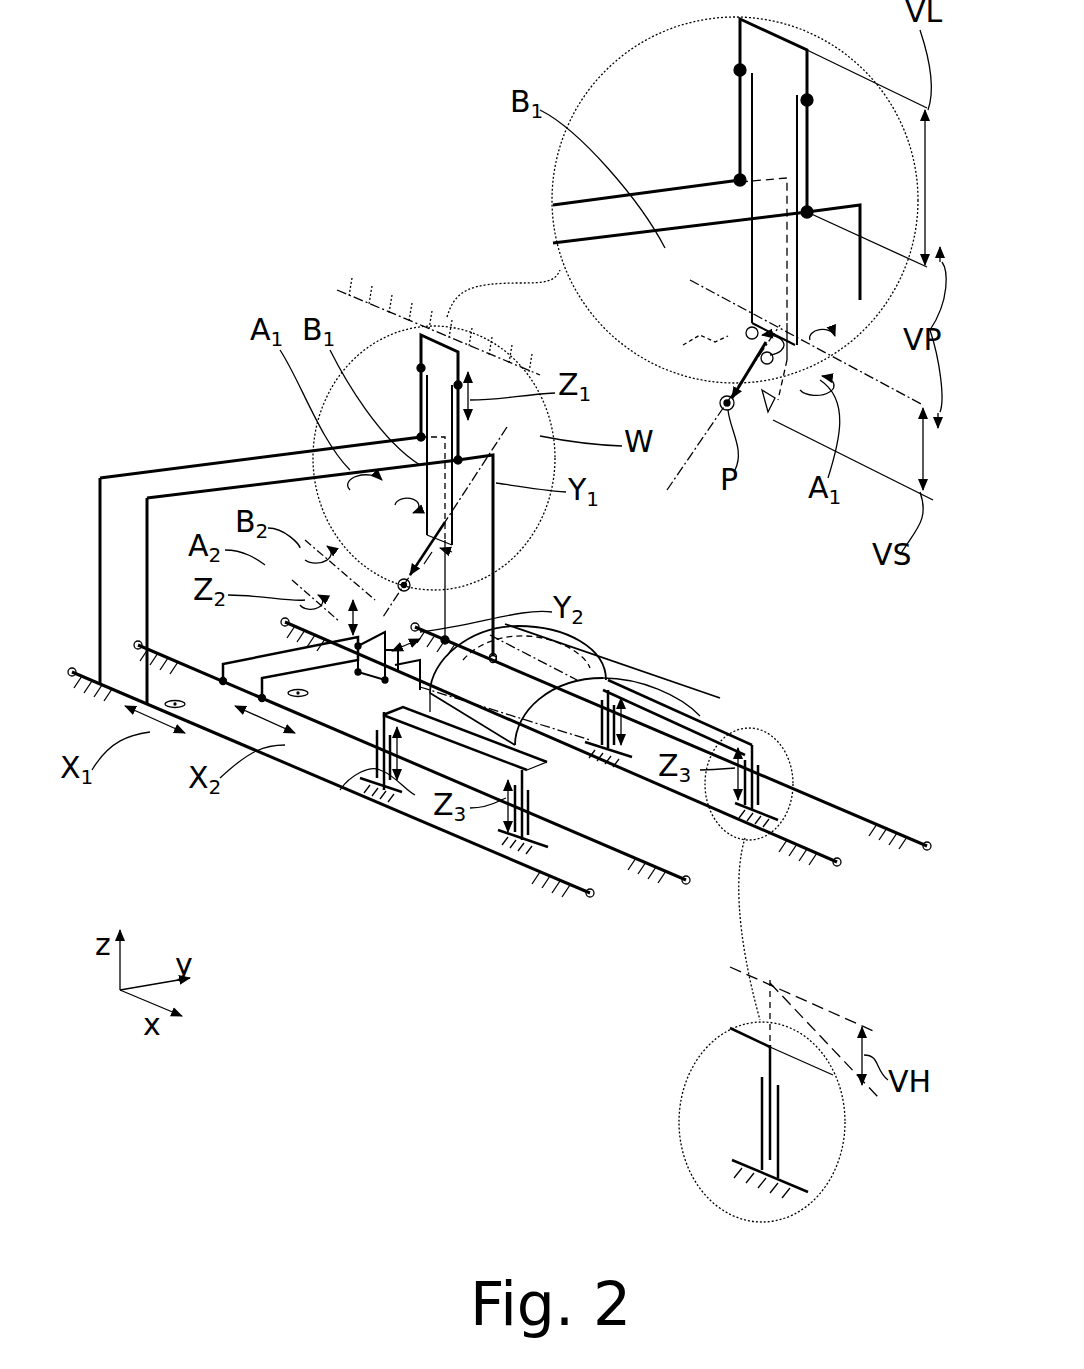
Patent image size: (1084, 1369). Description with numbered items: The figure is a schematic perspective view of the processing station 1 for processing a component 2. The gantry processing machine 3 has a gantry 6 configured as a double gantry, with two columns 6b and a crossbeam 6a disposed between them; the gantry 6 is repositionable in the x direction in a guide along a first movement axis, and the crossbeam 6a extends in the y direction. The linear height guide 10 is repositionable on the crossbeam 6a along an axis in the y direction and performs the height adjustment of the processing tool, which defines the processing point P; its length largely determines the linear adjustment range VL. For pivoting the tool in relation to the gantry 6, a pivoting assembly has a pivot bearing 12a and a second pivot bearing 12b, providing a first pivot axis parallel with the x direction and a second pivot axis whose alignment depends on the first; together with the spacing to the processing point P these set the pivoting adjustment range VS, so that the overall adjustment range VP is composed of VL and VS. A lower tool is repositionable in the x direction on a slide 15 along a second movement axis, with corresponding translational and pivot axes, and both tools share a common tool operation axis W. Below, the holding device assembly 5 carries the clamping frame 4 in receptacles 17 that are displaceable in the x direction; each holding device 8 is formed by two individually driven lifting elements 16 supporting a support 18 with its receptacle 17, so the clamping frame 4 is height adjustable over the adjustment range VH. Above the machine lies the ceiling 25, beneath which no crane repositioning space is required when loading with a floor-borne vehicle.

The processing station 1 is at (160, 258).
The component 2 is at (555, 640).
The gantry processing machine 3 is at (130, 370).
The clamping frame 4 is at (365, 762).
The holding device assembly 5 is at (388, 707).
The gantry 6 is at (270, 502).
The crossbeam 6a is at (200, 470).
The columns 6b is at (122, 556).
The holding device 8 is at (700, 1076).
The linear height guide 10 is at (715, 115).
The pivot bearing 12a is at (448, 548).
The second pivot bearing 12b is at (425, 577).
The slide 15 is at (270, 660).
The lifting elements 16 is at (520, 852).
The receptacles 17 is at (605, 787).
The support 18 is at (528, 790).
The ceiling 25 is at (365, 300).